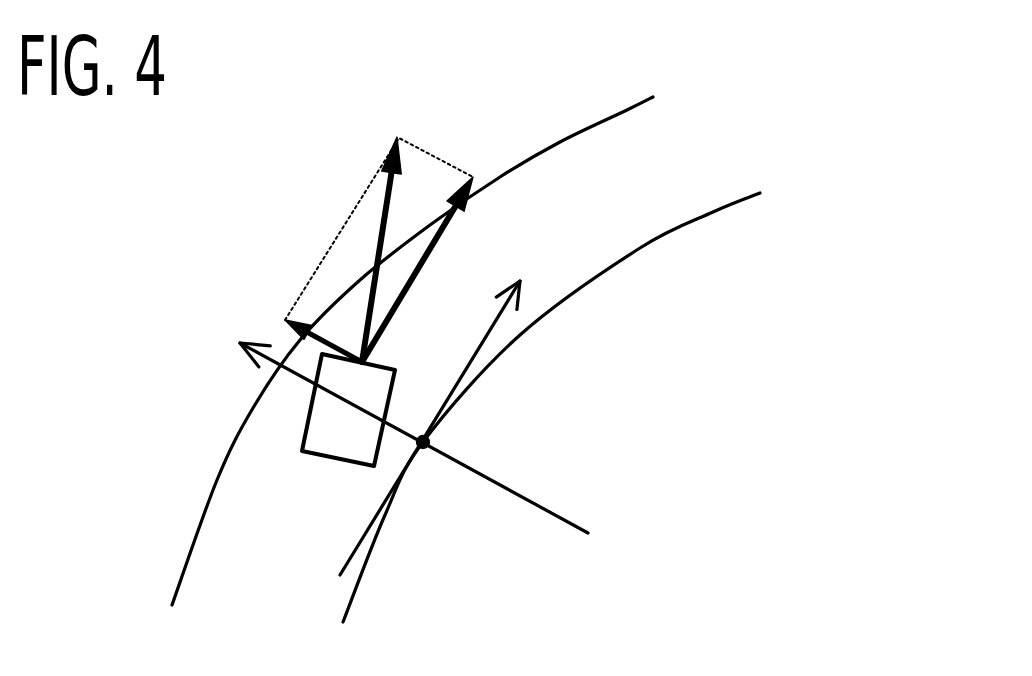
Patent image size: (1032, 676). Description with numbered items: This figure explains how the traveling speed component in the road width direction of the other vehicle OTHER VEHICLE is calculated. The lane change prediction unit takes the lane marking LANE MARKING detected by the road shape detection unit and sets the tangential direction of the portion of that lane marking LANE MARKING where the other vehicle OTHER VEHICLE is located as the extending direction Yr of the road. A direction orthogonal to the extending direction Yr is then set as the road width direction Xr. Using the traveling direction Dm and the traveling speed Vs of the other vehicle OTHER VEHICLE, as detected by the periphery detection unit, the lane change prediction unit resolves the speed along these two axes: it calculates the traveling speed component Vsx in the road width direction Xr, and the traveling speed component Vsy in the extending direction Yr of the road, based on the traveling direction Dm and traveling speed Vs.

The traveling direction Dm is at (362, 224).
The traveling speed Vs is at (380, 213).
The traveling speed component in the road width direction Vsx is at (328, 335).
The traveling speed component in the extending direction of the road Vsy is at (432, 258).
The extending direction of the road Yr is at (492, 333).
The road width direction Xr is at (512, 487).
The lane marking LANE MARKING is at (632, 109).
The other vehicle OTHER VEHICLE is at (302, 452).